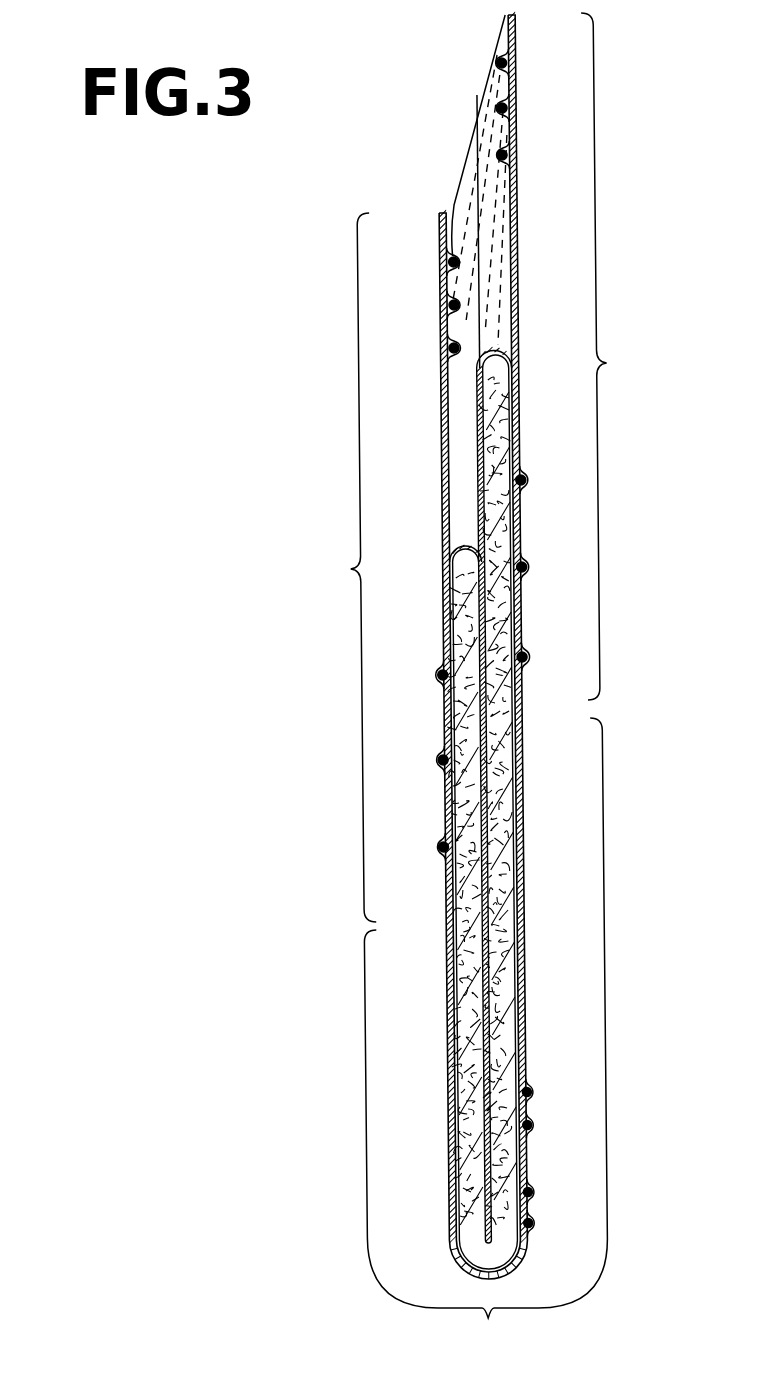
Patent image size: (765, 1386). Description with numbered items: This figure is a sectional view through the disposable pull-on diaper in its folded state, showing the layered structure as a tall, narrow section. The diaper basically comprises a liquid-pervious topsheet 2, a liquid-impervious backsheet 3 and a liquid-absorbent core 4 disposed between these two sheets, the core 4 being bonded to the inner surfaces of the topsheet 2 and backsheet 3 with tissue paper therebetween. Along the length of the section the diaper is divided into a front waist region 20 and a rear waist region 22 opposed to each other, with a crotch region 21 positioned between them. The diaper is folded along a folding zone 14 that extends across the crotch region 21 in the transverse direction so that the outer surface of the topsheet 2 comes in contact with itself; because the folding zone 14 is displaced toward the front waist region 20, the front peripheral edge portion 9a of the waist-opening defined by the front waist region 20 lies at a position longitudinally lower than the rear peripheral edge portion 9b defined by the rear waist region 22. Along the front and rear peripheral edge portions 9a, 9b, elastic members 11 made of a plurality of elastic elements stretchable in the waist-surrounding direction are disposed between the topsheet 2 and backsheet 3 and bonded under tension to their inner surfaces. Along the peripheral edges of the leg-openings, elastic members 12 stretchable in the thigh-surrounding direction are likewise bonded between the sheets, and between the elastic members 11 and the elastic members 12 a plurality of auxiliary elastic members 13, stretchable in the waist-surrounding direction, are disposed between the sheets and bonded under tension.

The topsheet 2 is at (475, 468).
The backsheet 3 is at (510, 455).
The core 4 is at (503, 408).
The front peripheral edge portion 9a is at (436, 232).
The rear peripheral edge portion 9b is at (514, 94).
The elastic members 11 is at (496, 152).
The elastic members 12 is at (521, 1095).
The auxiliary elastic members 13 is at (521, 482).
The folding zone 14 is at (465, 1279).
The front waist region 20 is at (341, 567).
The crotch region 21 is at (485, 1034).
The rear waist region 22 is at (613, 356).